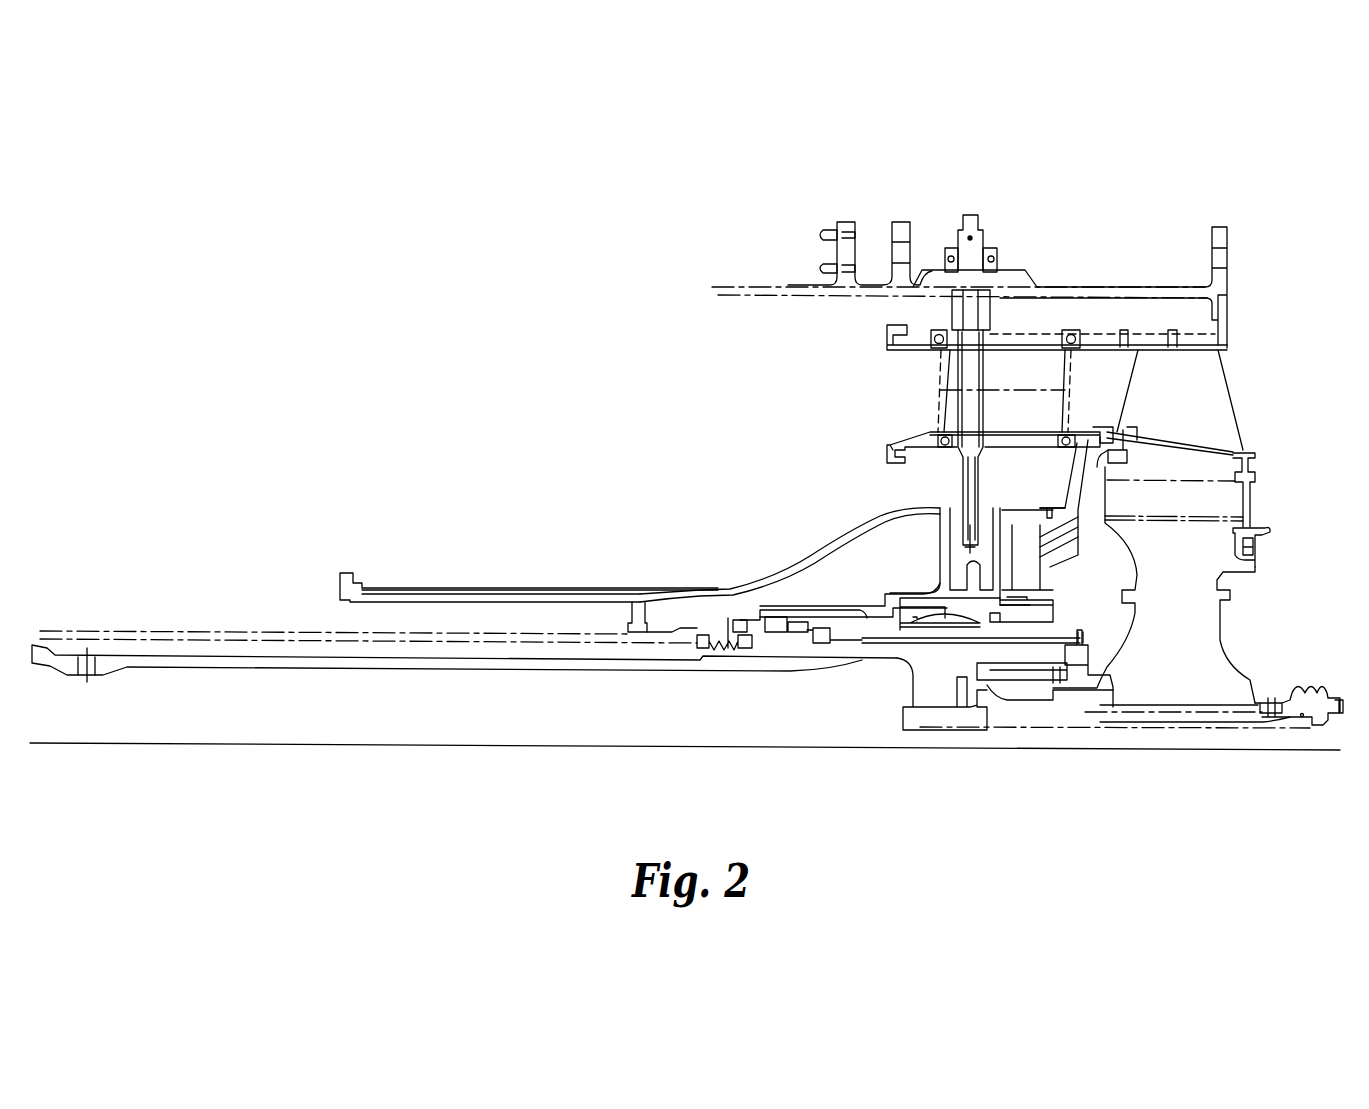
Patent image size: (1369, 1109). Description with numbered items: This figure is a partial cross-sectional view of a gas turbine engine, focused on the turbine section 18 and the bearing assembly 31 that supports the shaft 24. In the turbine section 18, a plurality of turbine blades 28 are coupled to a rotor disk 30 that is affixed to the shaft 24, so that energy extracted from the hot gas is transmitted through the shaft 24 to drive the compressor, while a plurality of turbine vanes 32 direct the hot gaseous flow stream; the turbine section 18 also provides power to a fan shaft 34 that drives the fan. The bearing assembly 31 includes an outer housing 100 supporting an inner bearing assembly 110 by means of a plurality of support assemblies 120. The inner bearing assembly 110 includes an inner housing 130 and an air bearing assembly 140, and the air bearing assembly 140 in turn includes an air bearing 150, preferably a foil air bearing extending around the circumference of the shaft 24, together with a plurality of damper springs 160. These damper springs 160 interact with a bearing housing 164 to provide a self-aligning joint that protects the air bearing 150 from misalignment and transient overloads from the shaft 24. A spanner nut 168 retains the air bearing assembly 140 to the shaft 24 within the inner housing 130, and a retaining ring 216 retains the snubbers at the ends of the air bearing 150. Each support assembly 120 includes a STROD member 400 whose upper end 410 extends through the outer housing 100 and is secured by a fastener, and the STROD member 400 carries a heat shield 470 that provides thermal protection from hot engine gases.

The turbine section 18 is at (1253, 389).
The shaft 24 is at (882, 647).
The turbine blades 28 is at (1223, 428).
The rotor disk 30 is at (1213, 658).
The bearing assembly 31 is at (857, 522).
The turbine vanes 32 is at (1038, 362).
The fan shaft 34 is at (1340, 753).
The outer housing 100 is at (750, 590).
The inner bearing assembly 110 is at (918, 586).
The support assemblies 120 is at (945, 468).
The inner housing 130 is at (1075, 578).
The air bearing assembly 140 is at (984, 630).
The air bearing 150 is at (851, 637).
The damper springs 160 is at (942, 630).
The bearing housing 164 is at (953, 600).
The spanner nut 168 is at (1045, 612).
The retaining ring 216 is at (1073, 645).
The STROD member 400 is at (975, 213).
The upper end 410 is at (1002, 246).
The heat shield 470 is at (957, 350).